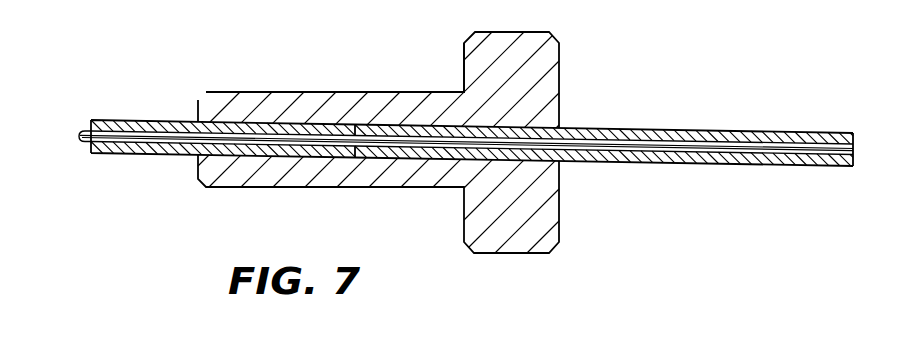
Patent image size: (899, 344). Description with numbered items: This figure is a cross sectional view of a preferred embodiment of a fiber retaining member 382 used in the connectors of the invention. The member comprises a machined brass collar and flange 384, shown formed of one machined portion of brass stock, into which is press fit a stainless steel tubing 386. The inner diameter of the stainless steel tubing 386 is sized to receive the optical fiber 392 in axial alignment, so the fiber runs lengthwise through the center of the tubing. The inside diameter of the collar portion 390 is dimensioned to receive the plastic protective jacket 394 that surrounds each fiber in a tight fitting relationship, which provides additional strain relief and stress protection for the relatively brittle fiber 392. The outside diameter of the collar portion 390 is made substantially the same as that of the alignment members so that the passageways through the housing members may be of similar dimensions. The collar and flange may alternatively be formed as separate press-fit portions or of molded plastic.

The fiber retaining member 382 is at (571, 51).
The machined brass collar and flange 384 is at (464, 80).
The stainless steel tubing 386 is at (688, 133).
The collar portion 390 is at (213, 92).
The optical fiber 392 is at (710, 146).
The plastic protective jacket 394 is at (126, 121).